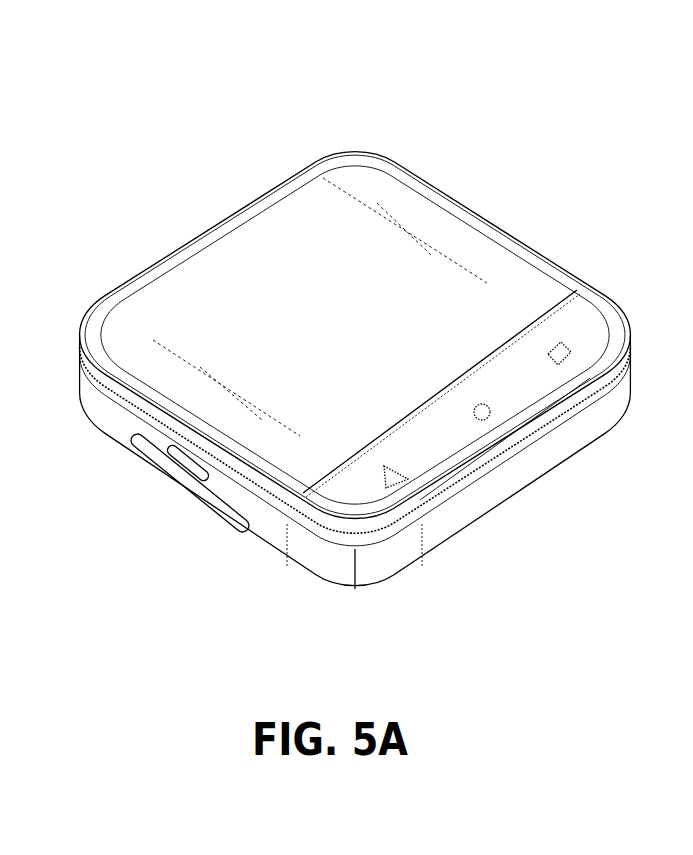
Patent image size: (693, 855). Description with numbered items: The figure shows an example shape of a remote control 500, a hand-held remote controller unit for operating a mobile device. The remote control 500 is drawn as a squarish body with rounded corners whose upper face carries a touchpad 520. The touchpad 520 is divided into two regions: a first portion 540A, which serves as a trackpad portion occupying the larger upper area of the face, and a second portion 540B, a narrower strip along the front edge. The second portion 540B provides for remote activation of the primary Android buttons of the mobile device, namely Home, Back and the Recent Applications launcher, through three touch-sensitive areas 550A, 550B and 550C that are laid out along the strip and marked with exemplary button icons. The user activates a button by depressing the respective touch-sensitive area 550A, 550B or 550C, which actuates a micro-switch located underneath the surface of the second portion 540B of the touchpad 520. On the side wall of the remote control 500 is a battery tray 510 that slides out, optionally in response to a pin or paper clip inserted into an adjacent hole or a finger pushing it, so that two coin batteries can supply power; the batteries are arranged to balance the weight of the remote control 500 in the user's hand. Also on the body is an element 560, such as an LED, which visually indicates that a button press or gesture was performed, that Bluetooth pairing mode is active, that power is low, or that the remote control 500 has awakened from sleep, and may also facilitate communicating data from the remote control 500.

The remote control 500 is at (336, 103).
The battery tray 510 is at (187, 480).
The touchpad 520 is at (523, 345).
The first portion 540A is at (328, 308).
The second portion 540B is at (451, 455).
The touch-sensitive area 550A is at (508, 397).
The touch-sensitive area 550B is at (580, 322).
The touch-sensitive area 550C is at (367, 493).
The element 560 is at (516, 472).